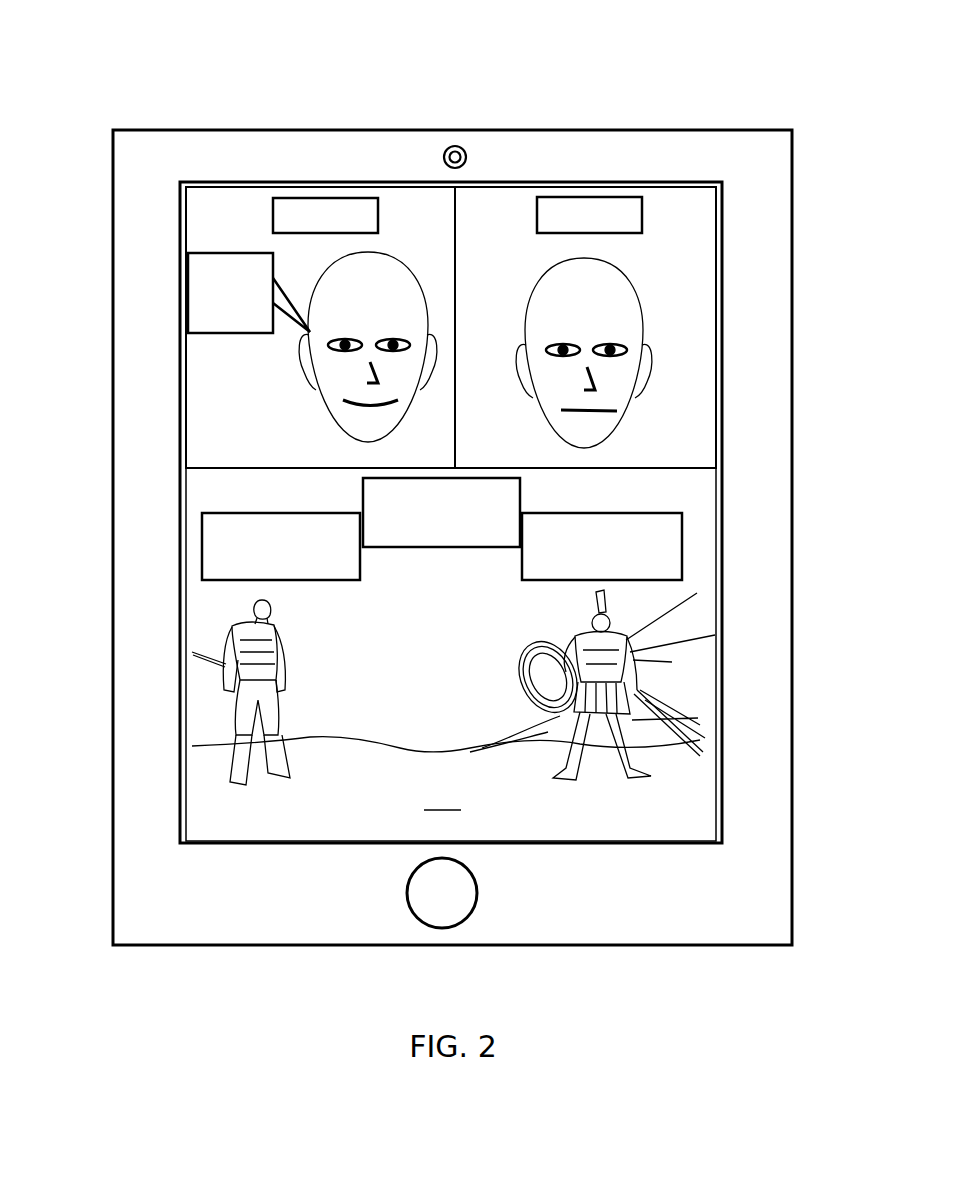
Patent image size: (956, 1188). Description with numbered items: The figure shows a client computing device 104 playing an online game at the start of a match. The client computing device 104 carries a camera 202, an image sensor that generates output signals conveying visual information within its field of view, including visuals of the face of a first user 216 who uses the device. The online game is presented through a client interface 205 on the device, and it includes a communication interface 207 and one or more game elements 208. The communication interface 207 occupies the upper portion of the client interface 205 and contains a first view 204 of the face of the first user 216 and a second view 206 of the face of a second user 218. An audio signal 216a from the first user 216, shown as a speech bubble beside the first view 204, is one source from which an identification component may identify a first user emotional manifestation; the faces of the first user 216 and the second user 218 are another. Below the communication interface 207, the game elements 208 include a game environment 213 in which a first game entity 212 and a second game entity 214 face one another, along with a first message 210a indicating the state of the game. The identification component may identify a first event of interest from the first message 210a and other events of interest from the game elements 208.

The client computing device 104 is at (512, 130).
The camera 202 is at (445, 147).
The first view 204 is at (198, 216).
The client interface 205 is at (722, 589).
The second view 206 is at (695, 215).
The communication interface 207 is at (325, 185).
The game element 208 is at (703, 505).
The first message 210a is at (408, 538).
The first game entity 212 is at (267, 647).
The game environment 213 is at (446, 764).
The second game entity 214 is at (583, 633).
The first user 216 is at (390, 275).
The audio signal 216a is at (213, 263).
The second user 218 is at (553, 306).